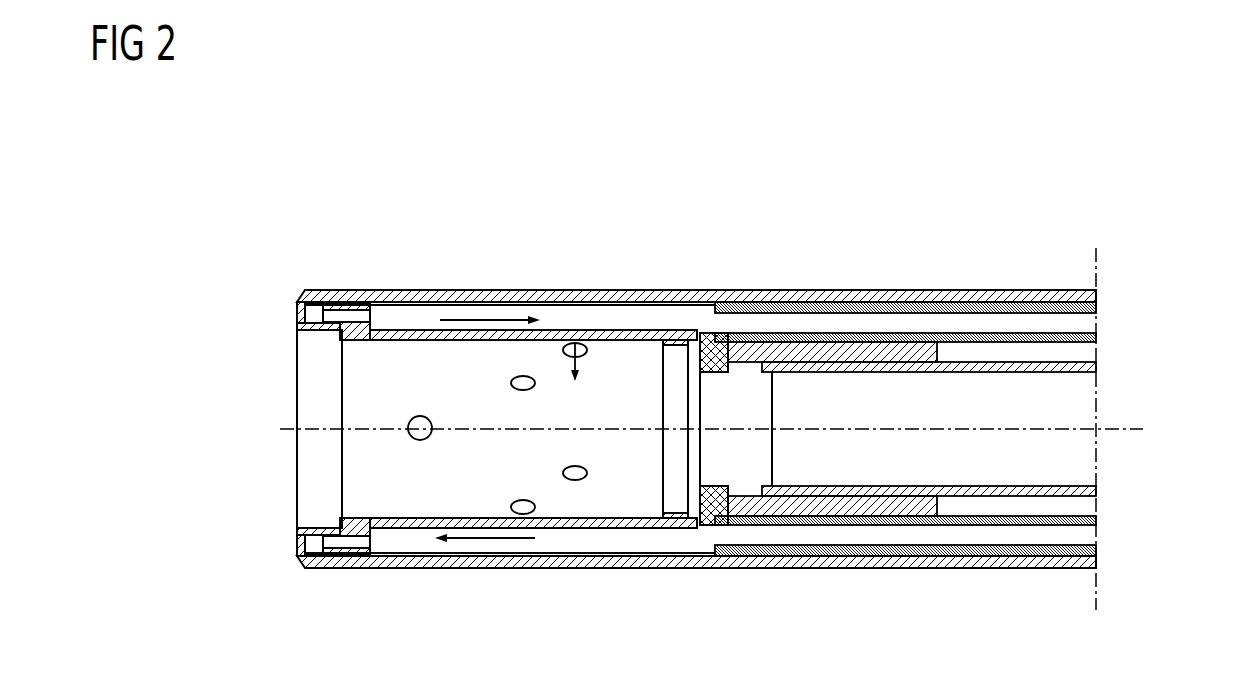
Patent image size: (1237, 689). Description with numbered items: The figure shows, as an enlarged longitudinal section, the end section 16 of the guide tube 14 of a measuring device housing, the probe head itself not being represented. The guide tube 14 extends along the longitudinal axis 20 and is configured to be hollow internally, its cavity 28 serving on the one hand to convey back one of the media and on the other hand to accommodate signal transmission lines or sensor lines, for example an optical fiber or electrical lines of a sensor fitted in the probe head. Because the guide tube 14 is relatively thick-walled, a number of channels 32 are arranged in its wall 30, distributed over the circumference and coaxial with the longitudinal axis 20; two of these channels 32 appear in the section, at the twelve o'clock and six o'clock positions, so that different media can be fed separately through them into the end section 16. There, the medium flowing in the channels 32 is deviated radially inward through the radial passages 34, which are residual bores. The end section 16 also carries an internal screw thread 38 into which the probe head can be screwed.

The guide tube 14 is at (1068, 200).
The end section 16 is at (506, 429).
The longitudinal axis 20 is at (1125, 429).
The cavity 28 is at (1087, 460).
The wall 30 is at (968, 305).
The channels 32 is at (840, 323).
The radial passages 34 is at (413, 420).
The internal screw thread 38 is at (688, 516).